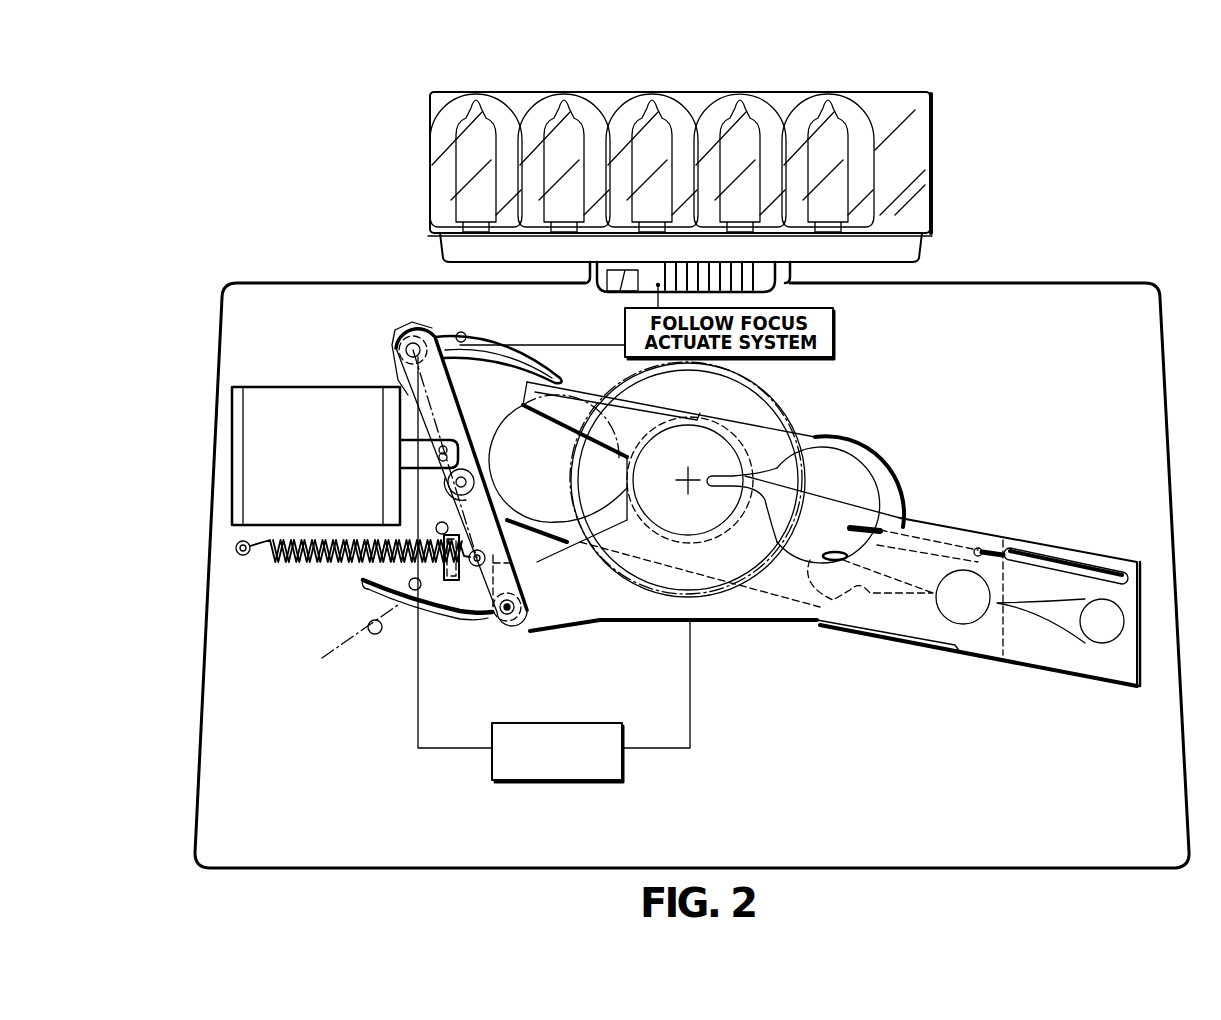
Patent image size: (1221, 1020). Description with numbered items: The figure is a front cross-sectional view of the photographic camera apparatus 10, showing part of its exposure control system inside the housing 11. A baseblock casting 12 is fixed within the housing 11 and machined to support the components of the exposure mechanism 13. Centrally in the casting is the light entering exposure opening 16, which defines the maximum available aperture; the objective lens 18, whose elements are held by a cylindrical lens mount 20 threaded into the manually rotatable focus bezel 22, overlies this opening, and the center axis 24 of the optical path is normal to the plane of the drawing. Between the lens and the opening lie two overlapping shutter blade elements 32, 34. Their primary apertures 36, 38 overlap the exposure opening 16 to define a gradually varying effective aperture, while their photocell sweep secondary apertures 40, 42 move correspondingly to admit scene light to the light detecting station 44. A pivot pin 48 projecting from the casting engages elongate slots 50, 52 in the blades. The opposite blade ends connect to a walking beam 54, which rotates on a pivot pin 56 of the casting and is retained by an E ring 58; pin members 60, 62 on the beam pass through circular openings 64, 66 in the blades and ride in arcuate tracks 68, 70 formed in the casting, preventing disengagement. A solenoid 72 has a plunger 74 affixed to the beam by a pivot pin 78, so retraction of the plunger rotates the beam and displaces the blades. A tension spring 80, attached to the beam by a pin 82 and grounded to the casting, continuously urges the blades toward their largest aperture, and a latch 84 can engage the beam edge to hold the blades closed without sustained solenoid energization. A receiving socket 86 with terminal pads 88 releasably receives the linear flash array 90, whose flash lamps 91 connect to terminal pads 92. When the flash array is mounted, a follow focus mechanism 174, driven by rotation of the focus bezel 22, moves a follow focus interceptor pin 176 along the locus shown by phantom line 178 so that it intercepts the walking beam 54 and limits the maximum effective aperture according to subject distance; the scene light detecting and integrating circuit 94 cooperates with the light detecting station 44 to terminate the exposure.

The photographic camera apparatus 10 is at (1108, 256).
The housing 11 is at (1166, 370).
The baseblock casting 12 is at (835, 547).
The exposure mechanism 13 is at (696, 479).
The light entering exposure opening 16 is at (710, 526).
The objective lens 18 is at (676, 459).
The cylindrical lens mount 20 is at (764, 408).
The focus bezel 22 is at (808, 468).
The center axis 24 is at (690, 492).
The shutter blade element 32 is at (500, 352).
The shutter blade element 34 is at (742, 620).
The primary aperture 36 is at (496, 452).
The primary aperture 38 is at (775, 536).
The photocell sweep secondary aperture 40 is at (875, 588).
The photocell sweep secondary aperture 42 is at (1088, 634).
The light detecting station 44 is at (972, 615).
The pivot pin 48 is at (979, 548).
The elongate slot 50 is at (930, 548).
The elongate slot 52 is at (1082, 570).
The walking beam 54 is at (532, 567).
The pivot pin 56 is at (463, 470).
The E ring 58 is at (476, 481).
The pin member 60 is at (406, 347).
The pin member 62 is at (503, 619).
The circular opening 64 is at (411, 340).
The circular opening 66 is at (516, 603).
The arcuate track 68 is at (461, 332).
The arcuate track 70 is at (452, 612).
The solenoid 72 is at (272, 380).
The plunger 74 is at (433, 469).
The pivot pin 78 is at (440, 448).
The tension spring 80 is at (302, 558).
The pin 82 is at (477, 550).
The latch 84 is at (447, 574).
The receiving socket 86 is at (692, 274).
The terminal pads 88 is at (720, 296).
The linear flash array 90 is at (703, 159).
The flash lamps 91 is at (820, 92).
The terminal pads 92 is at (737, 263).
The scene light detecting and integrating circuit 94 is at (617, 295).
The follow focus mechanism 174 is at (572, 782).
The follow focus interceptor pin 176 is at (410, 582).
The phantom line 178 is at (387, 612).